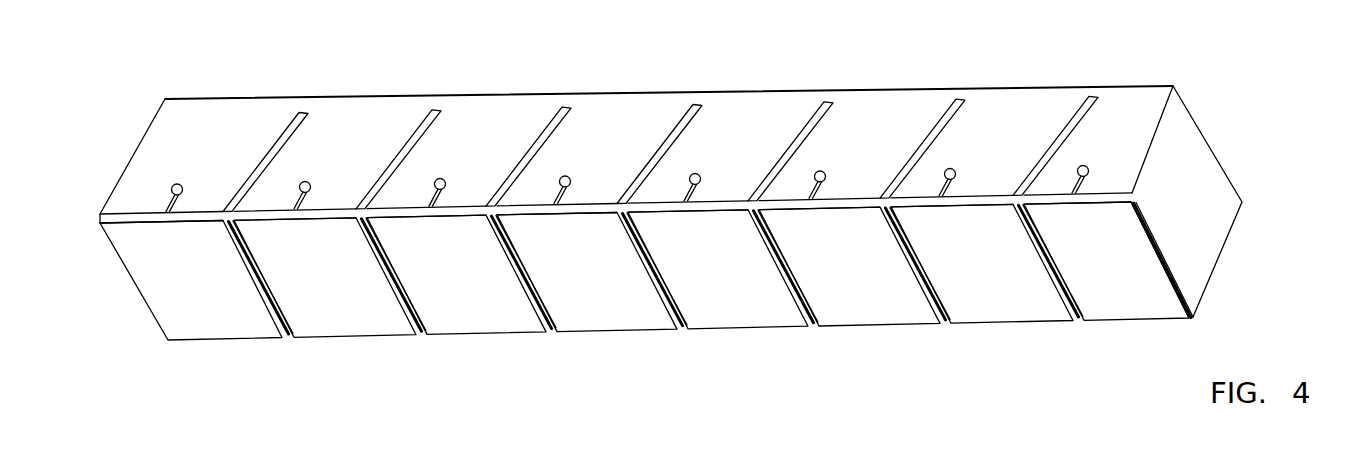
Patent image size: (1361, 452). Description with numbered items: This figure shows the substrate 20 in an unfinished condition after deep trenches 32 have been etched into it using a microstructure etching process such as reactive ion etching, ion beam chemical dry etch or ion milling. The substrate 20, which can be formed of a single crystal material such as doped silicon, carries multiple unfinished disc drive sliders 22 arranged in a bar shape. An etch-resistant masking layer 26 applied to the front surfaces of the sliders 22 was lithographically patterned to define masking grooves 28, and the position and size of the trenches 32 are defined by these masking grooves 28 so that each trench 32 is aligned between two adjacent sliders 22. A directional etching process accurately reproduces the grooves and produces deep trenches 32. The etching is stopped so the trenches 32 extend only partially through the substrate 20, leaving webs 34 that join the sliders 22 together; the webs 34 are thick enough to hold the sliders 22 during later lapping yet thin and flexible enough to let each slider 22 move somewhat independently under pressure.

The substrate 20 is at (1236, 112).
The disc drive slider 22 is at (201, 167).
The masking layer 26 is at (213, 292).
The masking groove 28 is at (290, 337).
The deep trench 32 is at (274, 140).
The web 34 is at (693, 103).